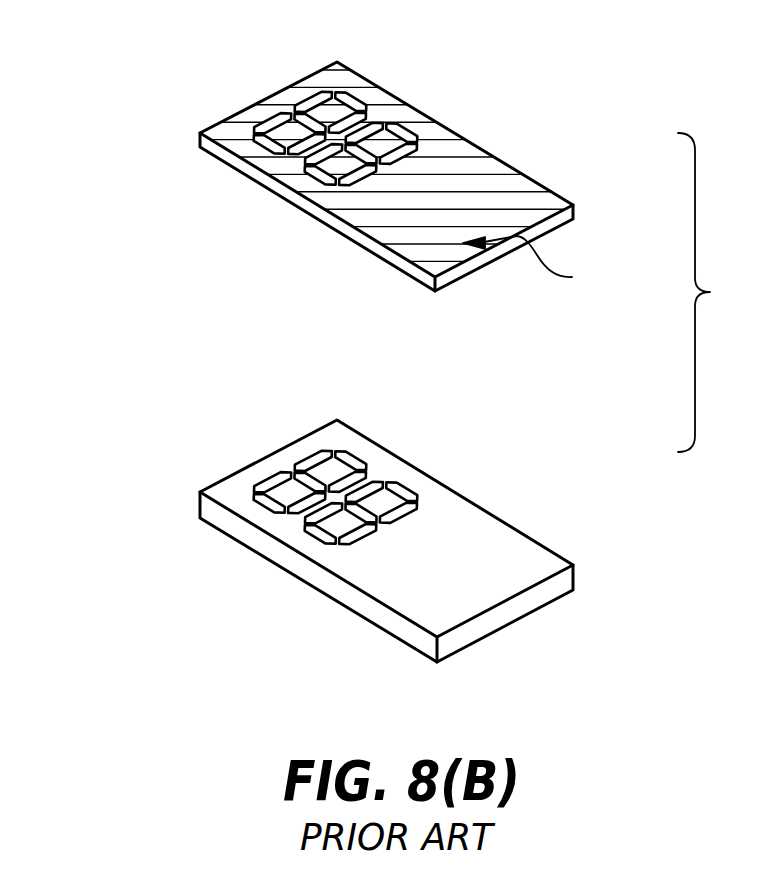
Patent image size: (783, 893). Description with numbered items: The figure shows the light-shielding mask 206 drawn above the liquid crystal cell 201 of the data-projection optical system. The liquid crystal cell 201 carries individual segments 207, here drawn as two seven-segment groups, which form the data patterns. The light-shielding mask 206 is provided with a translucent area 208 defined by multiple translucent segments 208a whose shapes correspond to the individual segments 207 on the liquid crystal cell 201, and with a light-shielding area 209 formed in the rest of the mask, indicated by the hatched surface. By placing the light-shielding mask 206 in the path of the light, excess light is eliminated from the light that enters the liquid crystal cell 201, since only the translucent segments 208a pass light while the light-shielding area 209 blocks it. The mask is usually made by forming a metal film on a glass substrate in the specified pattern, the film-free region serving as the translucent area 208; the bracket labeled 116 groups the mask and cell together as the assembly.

The display unit 116 is at (730, 292).
The liquid crystal cell 201 is at (518, 618).
The light-shielding mask 206 is at (537, 180).
The segments 207 is at (356, 540).
The translucent area 208 is at (362, 77).
The translucent segments 208a is at (401, 129).
The light-shielding area 209 is at (550, 265).